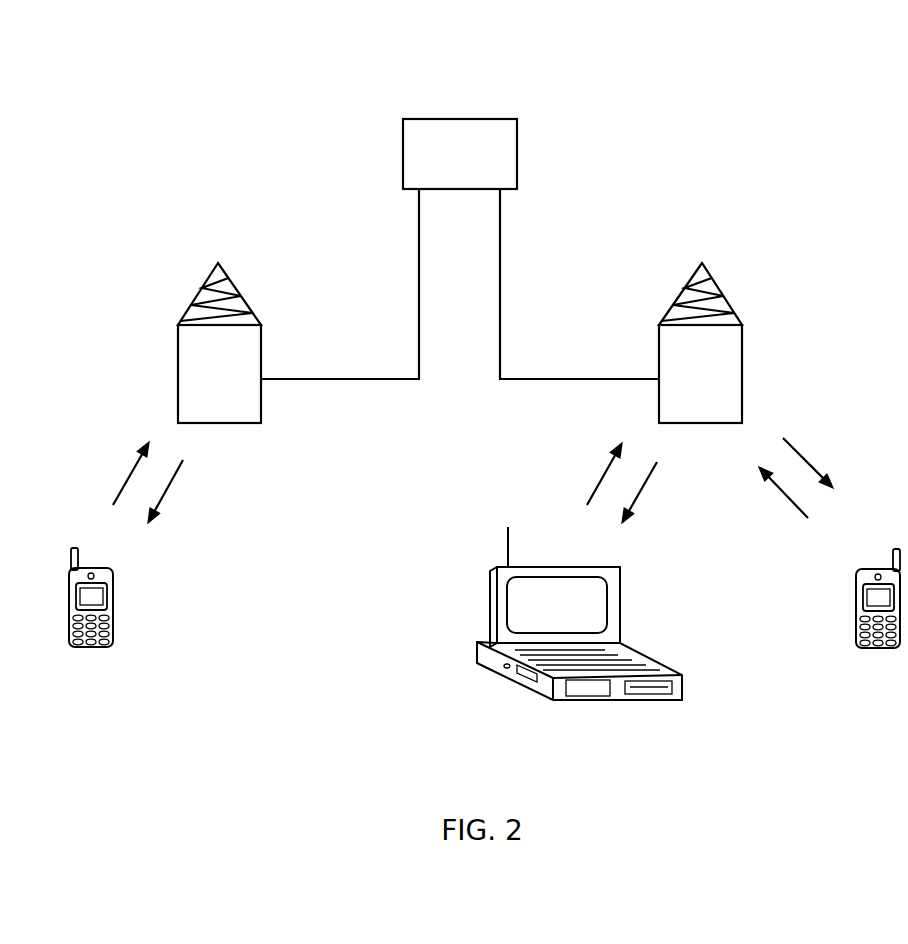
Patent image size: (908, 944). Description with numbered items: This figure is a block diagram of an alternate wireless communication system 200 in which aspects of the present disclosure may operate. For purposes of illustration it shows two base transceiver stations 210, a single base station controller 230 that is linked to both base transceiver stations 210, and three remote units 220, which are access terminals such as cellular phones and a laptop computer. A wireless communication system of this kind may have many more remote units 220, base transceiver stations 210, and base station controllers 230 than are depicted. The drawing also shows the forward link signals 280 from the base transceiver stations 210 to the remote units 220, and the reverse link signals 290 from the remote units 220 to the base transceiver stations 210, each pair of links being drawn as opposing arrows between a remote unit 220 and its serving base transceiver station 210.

The wireless communication system 200 is at (199, 44).
The base transceiver station 210 is at (202, 292).
The remote unit 220 is at (112, 576).
The base station controller 230 is at (472, 120).
The forward link signal 280 is at (165, 488).
The reverse link signal 290 is at (130, 470).